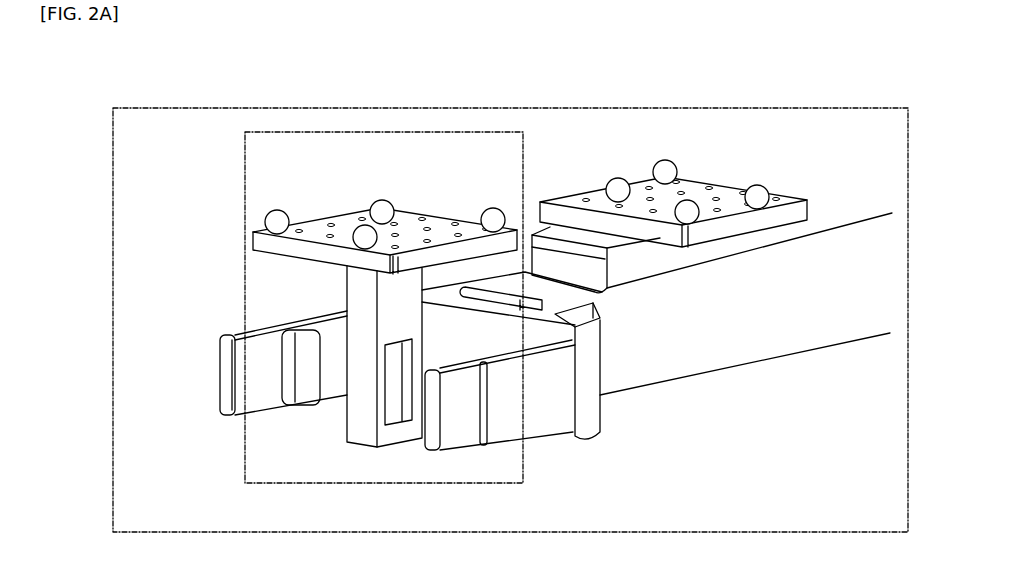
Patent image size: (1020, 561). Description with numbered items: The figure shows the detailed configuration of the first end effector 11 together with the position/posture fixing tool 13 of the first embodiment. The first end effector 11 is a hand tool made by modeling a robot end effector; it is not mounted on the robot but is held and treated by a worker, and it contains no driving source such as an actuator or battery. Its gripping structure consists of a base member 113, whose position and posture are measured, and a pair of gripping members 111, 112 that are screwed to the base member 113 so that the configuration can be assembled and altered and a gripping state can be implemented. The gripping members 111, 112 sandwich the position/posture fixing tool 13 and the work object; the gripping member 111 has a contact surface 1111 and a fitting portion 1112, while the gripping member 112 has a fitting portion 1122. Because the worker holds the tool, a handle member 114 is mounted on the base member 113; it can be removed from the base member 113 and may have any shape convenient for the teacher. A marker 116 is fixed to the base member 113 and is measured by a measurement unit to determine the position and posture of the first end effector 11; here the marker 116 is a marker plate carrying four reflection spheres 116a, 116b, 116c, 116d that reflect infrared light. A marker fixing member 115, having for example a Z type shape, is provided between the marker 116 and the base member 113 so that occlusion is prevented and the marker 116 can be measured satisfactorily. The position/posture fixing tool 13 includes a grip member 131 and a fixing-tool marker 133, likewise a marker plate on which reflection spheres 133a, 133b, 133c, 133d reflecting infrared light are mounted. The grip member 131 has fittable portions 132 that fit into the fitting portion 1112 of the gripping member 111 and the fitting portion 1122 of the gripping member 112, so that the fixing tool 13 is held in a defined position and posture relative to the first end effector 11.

The first end effector 11 is at (832, 108).
The position/posture fixing tool 13 is at (312, 483).
The gripping member 111 is at (240, 332).
The contact surface 1111 is at (265, 377).
The fitting portion 1112 is at (297, 332).
The gripping member 112 is at (557, 433).
The fitting portion 1122 is at (470, 360).
The base member 113 is at (590, 417).
The handle member 114 is at (757, 362).
The marker fixing member 115 is at (610, 300).
The marker 116 is at (556, 195).
The reflection sphere 116a is at (619, 178).
The reflection sphere 116b is at (692, 202).
The reflection sphere 116c is at (665, 160).
The reflection sphere 116d is at (758, 185).
The grip member 131 is at (362, 418).
The fittable portion 132 is at (395, 413).
The fixing-tool marker 133 is at (428, 213).
The reflection sphere 133a is at (275, 210).
The reflection sphere 133b is at (353, 228).
The reflection sphere 133c is at (382, 200).
The reflection sphere 133d is at (493, 208).